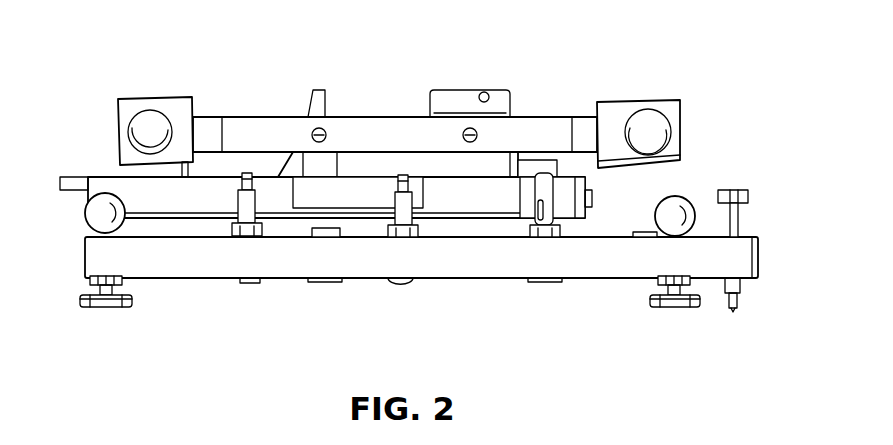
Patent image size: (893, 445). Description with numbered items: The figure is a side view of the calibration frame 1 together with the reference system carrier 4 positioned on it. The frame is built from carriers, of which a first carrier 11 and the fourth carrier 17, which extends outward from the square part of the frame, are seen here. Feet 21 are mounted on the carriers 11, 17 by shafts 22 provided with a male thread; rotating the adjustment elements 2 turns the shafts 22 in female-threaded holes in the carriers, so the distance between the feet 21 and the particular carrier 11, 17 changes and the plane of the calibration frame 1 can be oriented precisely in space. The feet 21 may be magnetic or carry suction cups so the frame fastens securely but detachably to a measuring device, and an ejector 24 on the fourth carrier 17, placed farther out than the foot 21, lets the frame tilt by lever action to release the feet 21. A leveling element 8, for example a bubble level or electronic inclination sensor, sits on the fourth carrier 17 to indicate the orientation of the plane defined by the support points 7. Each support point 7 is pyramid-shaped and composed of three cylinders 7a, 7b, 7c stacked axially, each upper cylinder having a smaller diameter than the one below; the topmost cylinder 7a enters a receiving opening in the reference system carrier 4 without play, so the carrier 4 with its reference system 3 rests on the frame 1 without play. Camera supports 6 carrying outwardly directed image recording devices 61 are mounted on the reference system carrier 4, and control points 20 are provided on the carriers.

The calibration frame 1 is at (752, 44).
The adjustment elements 2 is at (100, 212).
The reference system 3 is at (335, 195).
The reference system carrier 4 is at (128, 188).
The camera supports 6 is at (541, 137).
The support points 7 is at (351, 204).
The topmost cylinder 7a is at (110, 175).
The middle cylinder 7b is at (543, 218).
The bottom cylinder 7c is at (118, 232).
The leveling element 8 is at (640, 232).
The first carriers 11 is at (498, 256).
The fourth carrier 17 is at (730, 258).
The control points 20 is at (330, 237).
The feet 21 is at (105, 307).
The shafts 22 is at (115, 280).
The ejector 24 is at (748, 196).
The image recording devices 61 is at (148, 130).